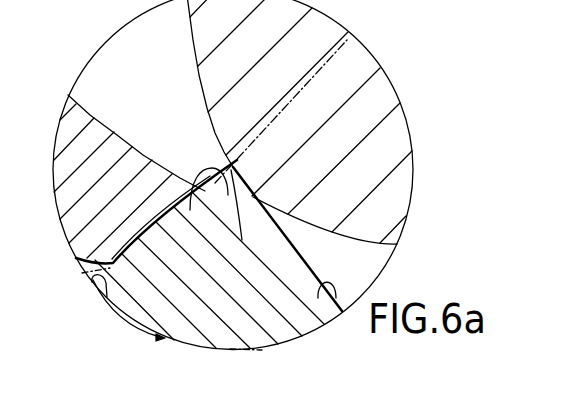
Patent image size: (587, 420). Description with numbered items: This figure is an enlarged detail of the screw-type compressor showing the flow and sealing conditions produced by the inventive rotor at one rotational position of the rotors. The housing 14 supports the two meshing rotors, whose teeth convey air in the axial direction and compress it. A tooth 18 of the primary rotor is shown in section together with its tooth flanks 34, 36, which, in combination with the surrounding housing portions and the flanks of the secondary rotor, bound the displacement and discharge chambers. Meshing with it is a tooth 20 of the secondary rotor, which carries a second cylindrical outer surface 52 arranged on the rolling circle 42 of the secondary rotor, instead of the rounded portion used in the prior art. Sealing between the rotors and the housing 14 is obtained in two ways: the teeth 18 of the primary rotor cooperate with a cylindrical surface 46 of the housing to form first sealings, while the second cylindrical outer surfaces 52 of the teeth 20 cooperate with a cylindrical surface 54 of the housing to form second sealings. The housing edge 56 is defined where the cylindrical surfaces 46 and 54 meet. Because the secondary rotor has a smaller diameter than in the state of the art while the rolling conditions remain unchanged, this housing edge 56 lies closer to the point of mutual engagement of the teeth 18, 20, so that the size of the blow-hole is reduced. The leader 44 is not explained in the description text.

The housing 14 is at (217, 338).
The teeth 18 is at (274, 85).
The teeth 20 is at (116, 181).
The tooth flank 34 is at (338, 231).
The tooth flank 36 is at (200, 34).
The rolling circle 42 is at (374, 34).
The gap 44 is at (256, 196).
The cylindrical surface 46 is at (328, 303).
The second cylindrical outer surfaces 52 is at (113, 305).
The cylindrical surface 54 is at (190, 210).
The housing edge 56 is at (242, 240).